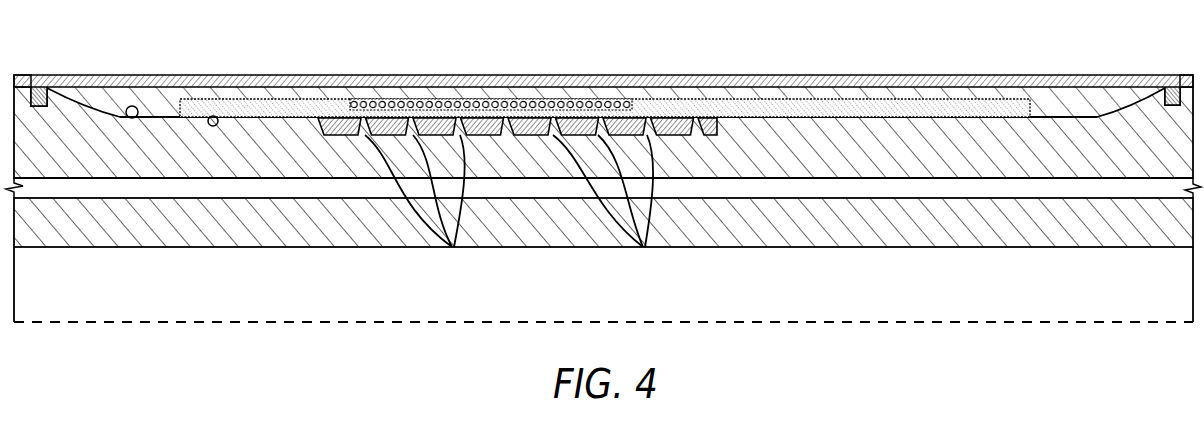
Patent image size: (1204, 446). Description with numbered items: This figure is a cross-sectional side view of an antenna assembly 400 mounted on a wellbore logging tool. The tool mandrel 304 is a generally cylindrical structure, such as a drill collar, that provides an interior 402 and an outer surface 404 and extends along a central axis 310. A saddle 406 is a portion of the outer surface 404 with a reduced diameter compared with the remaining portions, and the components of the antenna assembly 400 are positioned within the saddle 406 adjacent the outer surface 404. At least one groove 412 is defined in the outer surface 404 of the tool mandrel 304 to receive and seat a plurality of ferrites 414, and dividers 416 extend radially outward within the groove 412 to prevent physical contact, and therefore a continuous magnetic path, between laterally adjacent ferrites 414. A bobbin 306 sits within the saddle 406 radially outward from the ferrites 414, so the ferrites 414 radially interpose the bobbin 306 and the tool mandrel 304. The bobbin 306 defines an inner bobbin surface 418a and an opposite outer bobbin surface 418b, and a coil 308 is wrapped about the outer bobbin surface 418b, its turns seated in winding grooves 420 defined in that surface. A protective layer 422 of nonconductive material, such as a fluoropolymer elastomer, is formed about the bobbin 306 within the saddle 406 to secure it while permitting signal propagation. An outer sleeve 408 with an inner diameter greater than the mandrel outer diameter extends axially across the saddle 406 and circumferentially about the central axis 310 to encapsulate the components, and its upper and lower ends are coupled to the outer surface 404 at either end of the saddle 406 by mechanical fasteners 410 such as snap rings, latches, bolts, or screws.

The antenna assembly 400 is at (84, 22).
The outer surface 404 is at (20, 75).
The mechanical fasteners 410 is at (49, 87).
The protective layer 422 is at (117, 97).
The inner bobbin surface 418a is at (213, 116).
The coil 308 is at (410, 103).
The winding grooves 420 is at (452, 118).
The ferrites 414 is at (578, 122).
The outer bobbin surface 418b is at (748, 98).
The outer sleeve 408 is at (827, 77).
The bobbin 306 is at (937, 107).
The tool mandrel 304 is at (63, 237).
The saddle 406 is at (129, 118).
The groove 412 is at (333, 130).
The dividers 416 is at (514, 208).
The interior 402 is at (548, 302).
The central axis 310 is at (735, 322).